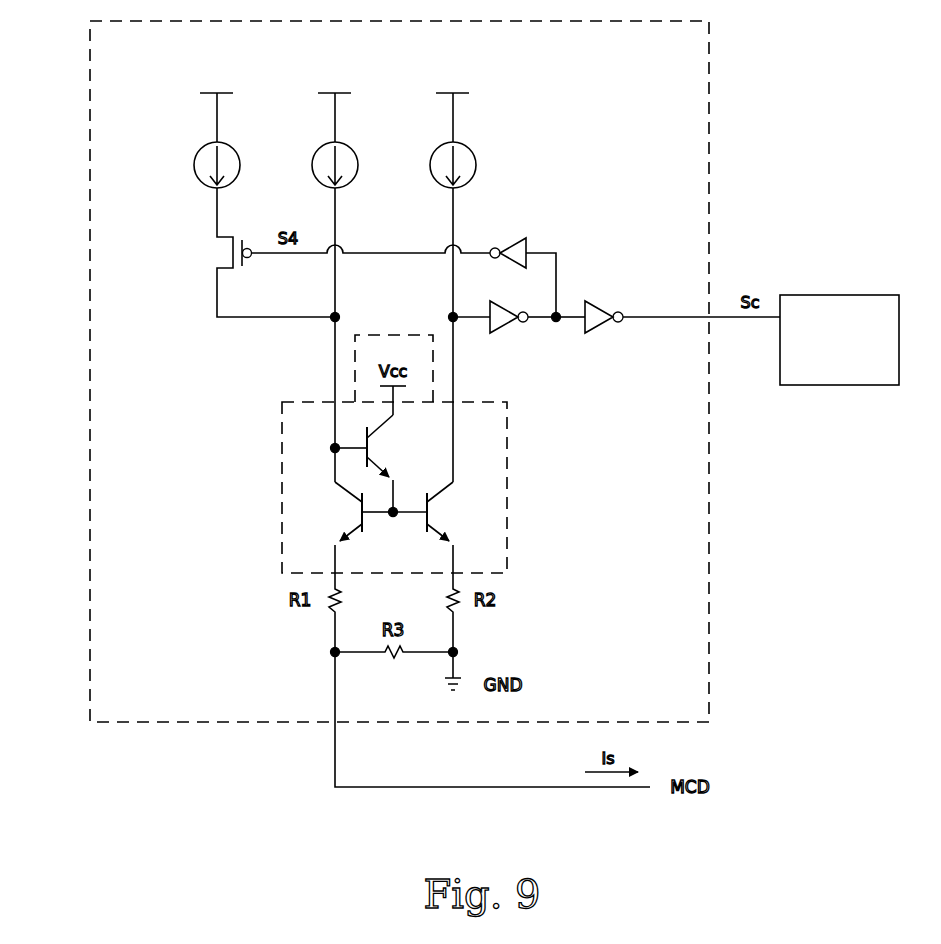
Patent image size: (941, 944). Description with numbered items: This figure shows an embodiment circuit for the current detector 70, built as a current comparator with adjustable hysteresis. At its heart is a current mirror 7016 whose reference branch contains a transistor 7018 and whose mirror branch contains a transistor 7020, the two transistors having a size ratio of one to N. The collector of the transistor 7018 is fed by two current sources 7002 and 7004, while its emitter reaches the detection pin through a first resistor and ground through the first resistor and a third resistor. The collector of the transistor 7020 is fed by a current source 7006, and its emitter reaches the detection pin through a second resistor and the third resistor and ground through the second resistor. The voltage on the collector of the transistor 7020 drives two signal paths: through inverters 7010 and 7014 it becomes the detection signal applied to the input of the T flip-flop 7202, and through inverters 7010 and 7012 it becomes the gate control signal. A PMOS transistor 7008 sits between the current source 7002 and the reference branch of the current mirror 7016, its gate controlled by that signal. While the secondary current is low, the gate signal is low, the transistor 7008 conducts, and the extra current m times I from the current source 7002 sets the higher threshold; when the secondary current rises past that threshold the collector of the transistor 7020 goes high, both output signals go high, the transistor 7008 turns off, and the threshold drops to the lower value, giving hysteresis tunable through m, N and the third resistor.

The current detector 70 is at (710, 155).
The current source 7002 is at (205, 148).
The current source 7004 is at (316, 148).
The current source 7006 is at (434, 148).
The transistor 7008 is at (196, 247).
The inverter 7010 is at (505, 322).
The inverter 7012 is at (510, 238).
The inverter 7014 is at (600, 303).
The current mirror 7016 is at (282, 540).
The transistor 7018 is at (316, 491).
The transistor 7020 is at (470, 492).
The T flip-flop 7202 is at (838, 293).